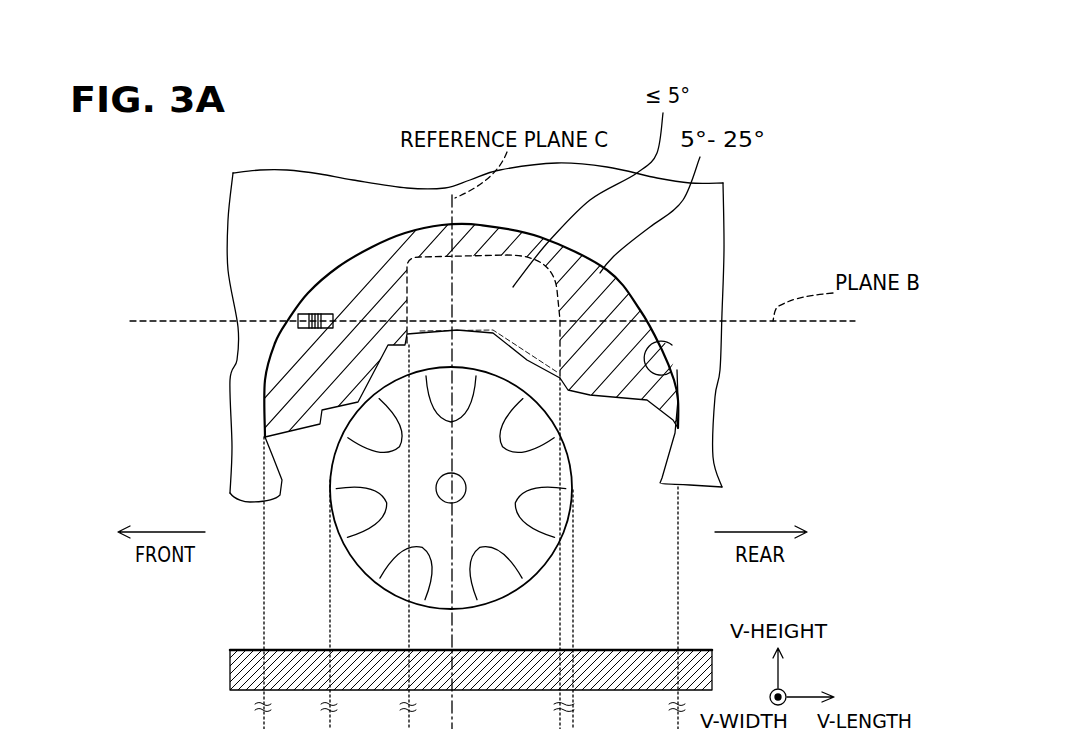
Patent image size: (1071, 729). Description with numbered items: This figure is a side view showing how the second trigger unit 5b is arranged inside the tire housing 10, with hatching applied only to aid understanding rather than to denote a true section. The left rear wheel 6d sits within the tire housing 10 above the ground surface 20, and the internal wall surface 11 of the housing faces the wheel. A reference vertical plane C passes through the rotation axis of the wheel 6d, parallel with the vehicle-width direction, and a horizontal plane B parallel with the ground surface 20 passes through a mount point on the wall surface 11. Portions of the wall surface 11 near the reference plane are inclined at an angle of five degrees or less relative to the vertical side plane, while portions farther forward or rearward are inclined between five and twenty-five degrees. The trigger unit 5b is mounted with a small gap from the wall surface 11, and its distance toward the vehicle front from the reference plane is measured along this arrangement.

The second trigger unit 5b is at (314, 313).
The left rear wheel 6d is at (569, 454).
The tire housing 10 is at (677, 370).
The internal wall surface 11 is at (638, 292).
The ground surface 20 is at (690, 650).